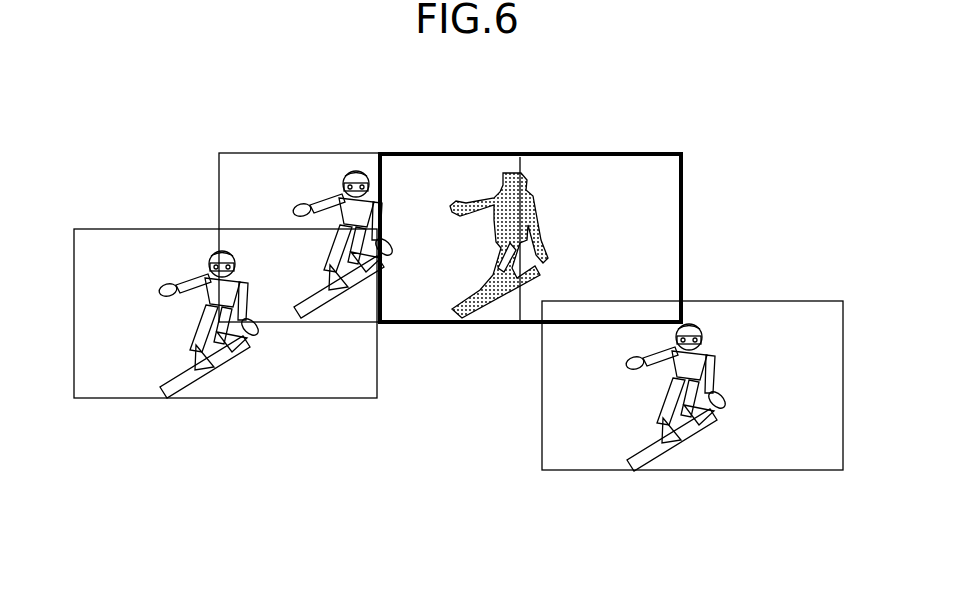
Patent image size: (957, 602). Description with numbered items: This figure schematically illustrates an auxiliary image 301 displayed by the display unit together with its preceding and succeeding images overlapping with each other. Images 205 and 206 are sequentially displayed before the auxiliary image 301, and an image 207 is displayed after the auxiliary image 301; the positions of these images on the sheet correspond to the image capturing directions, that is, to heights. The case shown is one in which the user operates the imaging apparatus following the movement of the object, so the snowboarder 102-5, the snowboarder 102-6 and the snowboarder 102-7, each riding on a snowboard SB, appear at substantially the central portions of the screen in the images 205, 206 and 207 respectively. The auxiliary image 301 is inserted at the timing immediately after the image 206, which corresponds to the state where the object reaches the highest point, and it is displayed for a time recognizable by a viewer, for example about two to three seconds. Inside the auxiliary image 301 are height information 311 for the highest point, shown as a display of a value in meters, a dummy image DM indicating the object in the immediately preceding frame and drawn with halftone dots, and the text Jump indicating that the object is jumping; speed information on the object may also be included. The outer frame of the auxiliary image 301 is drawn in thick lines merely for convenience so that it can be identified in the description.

The snowboarder 102-5 is at (200, 276).
The snowboarder 102-6 is at (353, 169).
The snowboarder 102-7 is at (698, 326).
The image 205 is at (100, 229).
The image 206 is at (251, 153).
The image 207 is at (800, 301).
The auxiliary image 301 is at (626, 154).
The height information 311 is at (672, 192).
The dummy image DM is at (517, 172).
The snowboard SB is at (182, 382).